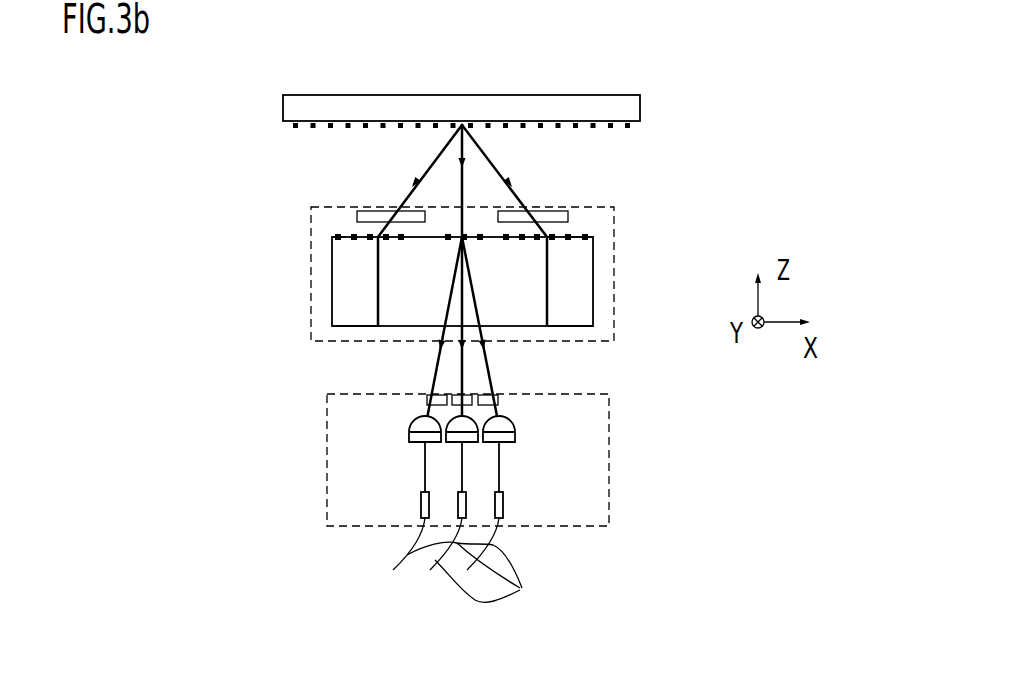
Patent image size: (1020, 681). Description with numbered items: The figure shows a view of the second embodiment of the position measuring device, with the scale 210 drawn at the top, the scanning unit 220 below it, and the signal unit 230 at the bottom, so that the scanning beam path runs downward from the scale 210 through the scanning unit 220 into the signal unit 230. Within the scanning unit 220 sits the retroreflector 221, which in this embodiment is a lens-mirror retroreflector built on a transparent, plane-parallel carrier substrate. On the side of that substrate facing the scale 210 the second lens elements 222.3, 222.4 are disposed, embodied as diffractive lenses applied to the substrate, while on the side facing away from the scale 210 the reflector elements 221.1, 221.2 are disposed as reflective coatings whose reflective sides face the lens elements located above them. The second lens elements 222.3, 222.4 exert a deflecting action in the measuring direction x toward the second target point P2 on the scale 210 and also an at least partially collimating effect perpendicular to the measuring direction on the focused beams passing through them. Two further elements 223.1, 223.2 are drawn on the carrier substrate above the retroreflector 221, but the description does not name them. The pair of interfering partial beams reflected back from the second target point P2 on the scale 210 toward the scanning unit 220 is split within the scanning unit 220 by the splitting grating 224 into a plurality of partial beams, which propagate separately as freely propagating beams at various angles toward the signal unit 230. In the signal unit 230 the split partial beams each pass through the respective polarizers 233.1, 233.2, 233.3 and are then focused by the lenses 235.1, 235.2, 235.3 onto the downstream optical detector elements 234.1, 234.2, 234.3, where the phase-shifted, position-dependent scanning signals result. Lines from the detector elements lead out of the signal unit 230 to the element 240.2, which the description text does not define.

The scale 210 is at (657, 107).
The second target point P2 is at (462, 125).
The scanning unit 220 is at (632, 248).
The retroreflector 221 is at (340, 285).
The reflector element 221.1 is at (333, 327).
The reflector element 221.2 is at (580, 328).
The second lens element 222.3 is at (340, 236).
The second lens element 222.4 is at (572, 235).
The scanning grating 223.1 is at (372, 211).
The scanning grating 223.2 is at (528, 211).
The splitting grating 224 is at (450, 236).
The signal unit 230 is at (624, 475).
The polarizer 233.1 is at (427, 398).
The polarizer 233.2 is at (458, 397).
The polarizer 233.3 is at (488, 396).
The optical detector element 234.1 is at (421, 504).
The optical detector element 234.2 is at (467, 497).
The optical detector element 234.3 is at (504, 497).
The lens 235.1 is at (422, 433).
The lens 235.2 is at (460, 436).
The lens 235.3 is at (494, 434).
The signal cable 240.2 is at (493, 563).